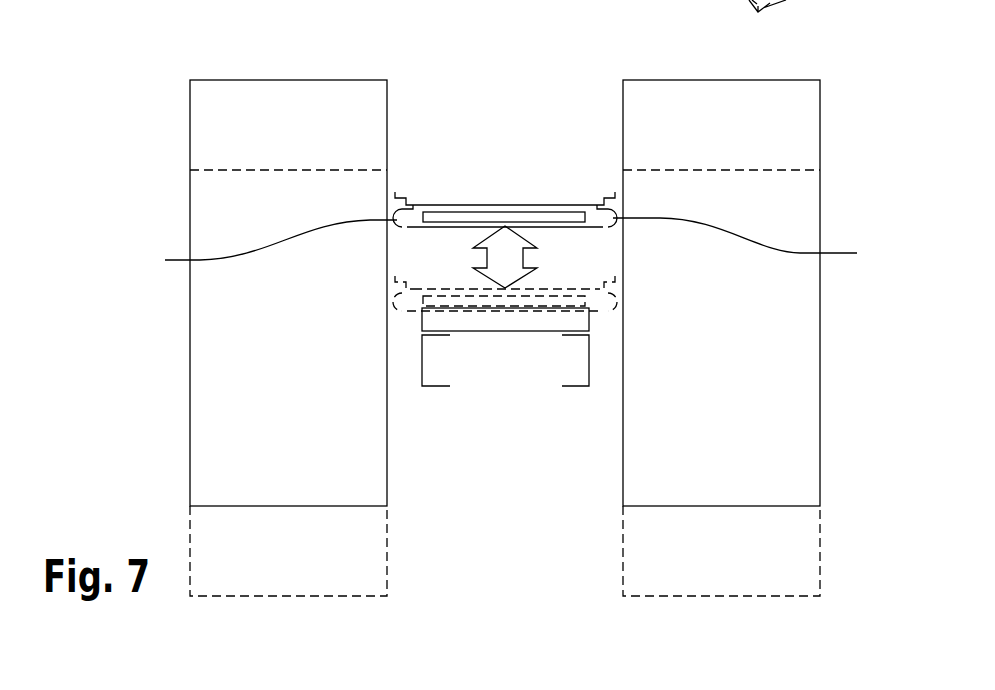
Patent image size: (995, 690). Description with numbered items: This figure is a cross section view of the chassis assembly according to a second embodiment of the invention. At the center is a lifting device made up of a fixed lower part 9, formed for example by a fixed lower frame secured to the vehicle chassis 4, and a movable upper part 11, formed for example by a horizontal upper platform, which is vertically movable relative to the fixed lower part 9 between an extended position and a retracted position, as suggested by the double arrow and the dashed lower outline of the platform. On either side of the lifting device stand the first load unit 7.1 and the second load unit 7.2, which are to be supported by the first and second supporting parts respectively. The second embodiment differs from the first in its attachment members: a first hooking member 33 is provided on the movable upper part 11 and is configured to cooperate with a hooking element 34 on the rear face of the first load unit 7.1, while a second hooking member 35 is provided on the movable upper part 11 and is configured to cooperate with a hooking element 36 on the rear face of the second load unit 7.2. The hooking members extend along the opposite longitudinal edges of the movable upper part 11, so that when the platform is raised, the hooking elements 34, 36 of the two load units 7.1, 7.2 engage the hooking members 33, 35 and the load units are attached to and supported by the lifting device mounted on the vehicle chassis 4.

The first load unit 7.1 is at (292, 127).
The second load unit 7.2 is at (697, 147).
The hooking element 36 is at (395, 192).
The hooking element 34 is at (615, 192).
The movable upper part 11 is at (487, 210).
The second hooking member 35 is at (265, 247).
The first hooking member 33 is at (752, 242).
The fixed lower part 9 is at (493, 321).
The vehicle chassis 4 is at (569, 386).